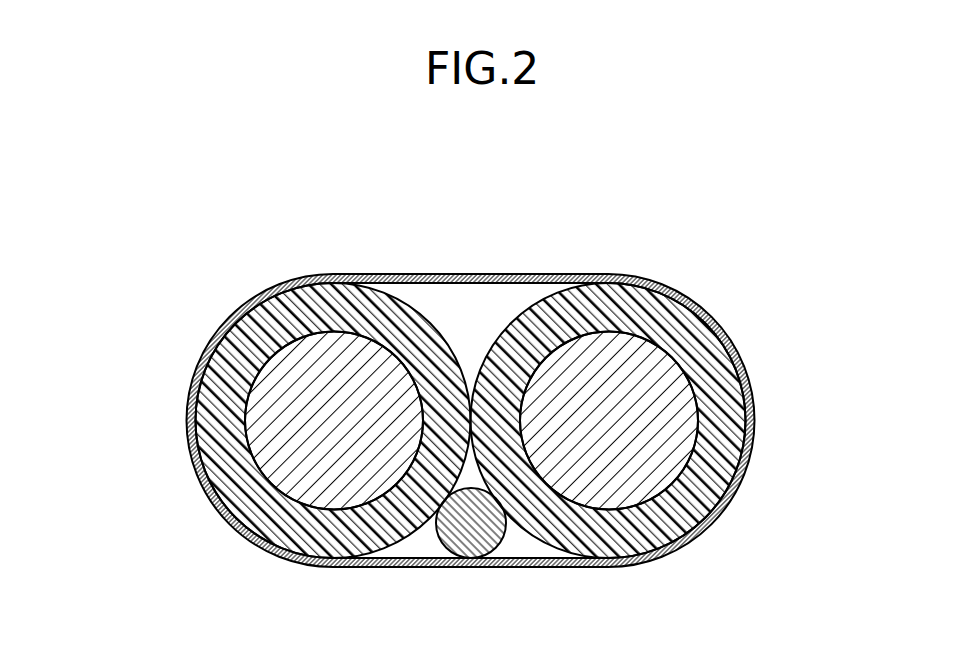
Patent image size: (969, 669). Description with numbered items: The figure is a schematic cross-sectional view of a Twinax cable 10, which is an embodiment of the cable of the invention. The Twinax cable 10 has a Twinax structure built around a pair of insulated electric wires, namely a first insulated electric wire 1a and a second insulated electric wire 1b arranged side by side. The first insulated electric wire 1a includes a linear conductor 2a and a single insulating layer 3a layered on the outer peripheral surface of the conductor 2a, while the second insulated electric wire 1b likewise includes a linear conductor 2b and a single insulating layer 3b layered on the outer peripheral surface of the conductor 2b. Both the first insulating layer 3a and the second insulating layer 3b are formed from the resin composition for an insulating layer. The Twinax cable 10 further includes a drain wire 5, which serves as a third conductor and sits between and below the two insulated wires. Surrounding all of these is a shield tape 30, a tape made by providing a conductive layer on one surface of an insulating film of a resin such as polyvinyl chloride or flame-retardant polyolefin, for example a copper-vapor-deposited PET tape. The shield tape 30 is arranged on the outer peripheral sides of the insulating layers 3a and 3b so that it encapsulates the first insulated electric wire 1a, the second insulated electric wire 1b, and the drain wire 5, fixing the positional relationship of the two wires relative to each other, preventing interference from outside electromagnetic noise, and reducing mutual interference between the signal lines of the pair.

The Twinax cable 10 is at (466, 367).
The shield tape 30 is at (467, 268).
The first insulated electric wire 1a is at (257, 420).
The second insulated electric wire 1b is at (680, 420).
The conductor 2a is at (240, 428).
The conductor 2b is at (703, 428).
The insulating layer 3a is at (203, 378).
The insulating layer 3b is at (722, 380).
The drain wire 5 is at (467, 551).